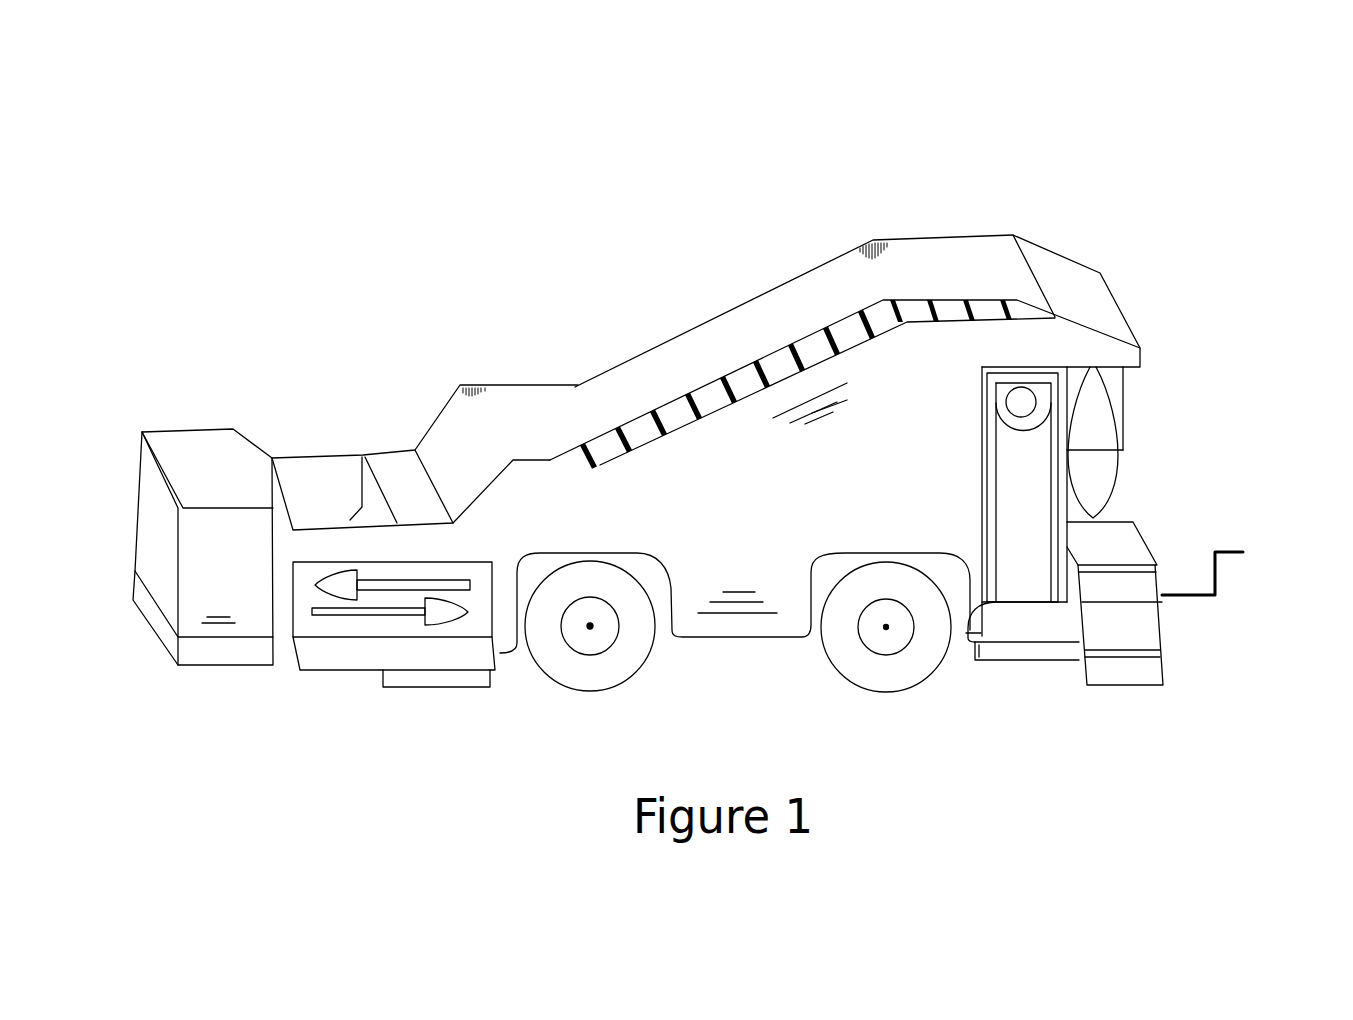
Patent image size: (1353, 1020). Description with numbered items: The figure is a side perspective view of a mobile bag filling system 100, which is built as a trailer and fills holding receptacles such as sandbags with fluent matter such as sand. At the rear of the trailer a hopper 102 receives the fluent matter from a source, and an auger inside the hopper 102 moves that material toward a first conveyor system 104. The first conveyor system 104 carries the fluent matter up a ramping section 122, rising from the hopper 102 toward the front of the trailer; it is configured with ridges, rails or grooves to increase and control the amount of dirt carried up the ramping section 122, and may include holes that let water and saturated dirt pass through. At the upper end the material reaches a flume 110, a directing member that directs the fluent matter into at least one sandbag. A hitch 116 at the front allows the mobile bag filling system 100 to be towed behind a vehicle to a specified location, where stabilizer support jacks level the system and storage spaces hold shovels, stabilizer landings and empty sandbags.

The mobile bag filling system 100 is at (352, 224).
The hopper 102 is at (295, 491).
The first conveyor system 104 is at (673, 418).
The flume 110 is at (1123, 417).
The hitch 116 is at (1217, 583).
The ramping section 122 is at (724, 331).